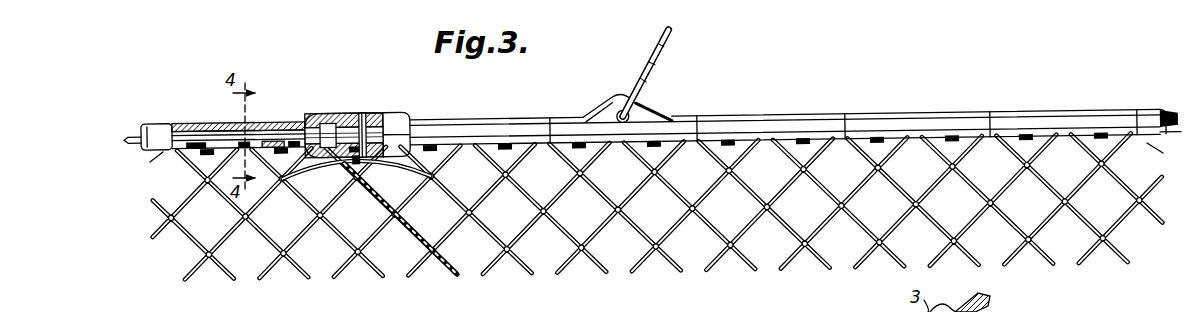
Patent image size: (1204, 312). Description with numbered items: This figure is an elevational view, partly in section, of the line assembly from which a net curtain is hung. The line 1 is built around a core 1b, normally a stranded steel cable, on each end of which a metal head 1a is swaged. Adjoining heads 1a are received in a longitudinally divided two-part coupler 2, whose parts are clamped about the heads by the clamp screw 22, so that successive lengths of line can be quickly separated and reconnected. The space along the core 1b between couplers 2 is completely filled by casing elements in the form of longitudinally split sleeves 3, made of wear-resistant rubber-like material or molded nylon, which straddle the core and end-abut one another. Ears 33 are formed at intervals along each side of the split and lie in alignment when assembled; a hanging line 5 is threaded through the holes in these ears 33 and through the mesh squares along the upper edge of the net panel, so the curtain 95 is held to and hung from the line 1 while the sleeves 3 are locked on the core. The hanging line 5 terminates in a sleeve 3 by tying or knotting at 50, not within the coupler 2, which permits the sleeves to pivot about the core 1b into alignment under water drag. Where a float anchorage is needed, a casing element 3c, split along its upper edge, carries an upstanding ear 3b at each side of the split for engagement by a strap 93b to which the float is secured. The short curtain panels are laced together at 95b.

The line 1 is at (643, 90).
The metal head 1a is at (328, 128).
The core 1b is at (137, 135).
The coupler 2 is at (362, 119).
The sleeve element 3 is at (795, 84).
The ear 3b is at (592, 111).
The casing element 3c is at (688, 118).
The hanging line 5 is at (190, 152).
The clamp screw 22 is at (364, 112).
The ear 33 is at (446, 158).
The tying or knotting 50 is at (432, 166).
The strap 93b is at (659, 63).
The curtain 95 is at (973, 218).
The lacing 95b is at (452, 258).